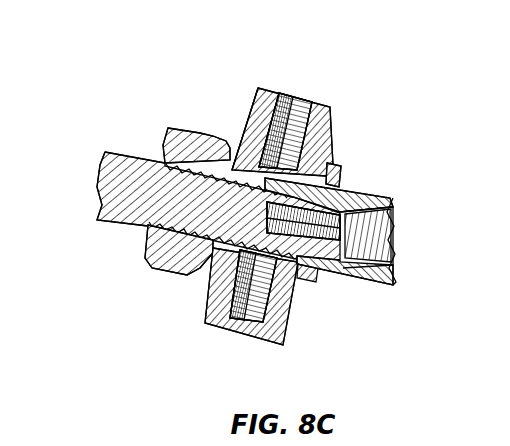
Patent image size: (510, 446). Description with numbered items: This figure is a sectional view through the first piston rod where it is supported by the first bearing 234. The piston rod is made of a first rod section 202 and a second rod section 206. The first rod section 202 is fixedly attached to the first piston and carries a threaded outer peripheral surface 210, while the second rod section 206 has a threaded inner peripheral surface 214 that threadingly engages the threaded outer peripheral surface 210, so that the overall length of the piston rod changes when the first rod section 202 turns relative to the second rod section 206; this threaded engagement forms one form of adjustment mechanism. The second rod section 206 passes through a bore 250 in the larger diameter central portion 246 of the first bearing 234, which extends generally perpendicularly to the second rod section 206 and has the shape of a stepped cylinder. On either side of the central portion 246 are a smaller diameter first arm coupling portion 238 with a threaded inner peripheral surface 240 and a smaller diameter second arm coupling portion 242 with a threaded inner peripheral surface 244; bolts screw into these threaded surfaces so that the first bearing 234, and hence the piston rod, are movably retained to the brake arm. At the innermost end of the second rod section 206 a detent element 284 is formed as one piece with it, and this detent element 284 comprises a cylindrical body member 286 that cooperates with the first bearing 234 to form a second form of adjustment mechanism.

The first rod section 202 is at (110, 150).
The second rod section 206 is at (385, 197).
The threaded outer peripheral surface 210 is at (287, 252).
The threaded inner peripheral surface 214 is at (350, 280).
The first bearing 234 is at (325, 95).
The first arm coupling portion 238 is at (207, 300).
The threaded inner peripheral surface 240 is at (240, 340).
The second arm coupling portion 242 is at (243, 110).
The threaded inner peripheral surface 244 is at (285, 97).
The central portion 246 is at (336, 166).
The bore 250 is at (353, 192).
The detent element 284 is at (167, 118).
The cylindrical body member 286 is at (152, 263).